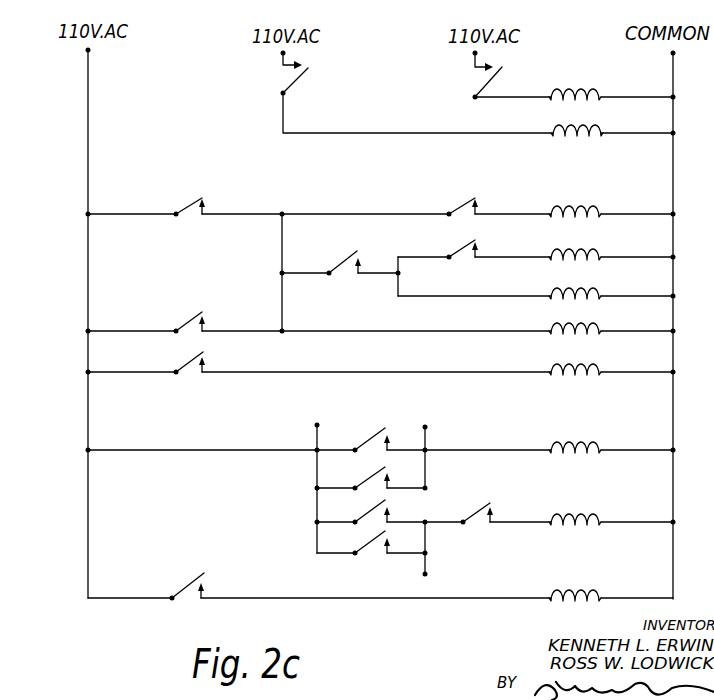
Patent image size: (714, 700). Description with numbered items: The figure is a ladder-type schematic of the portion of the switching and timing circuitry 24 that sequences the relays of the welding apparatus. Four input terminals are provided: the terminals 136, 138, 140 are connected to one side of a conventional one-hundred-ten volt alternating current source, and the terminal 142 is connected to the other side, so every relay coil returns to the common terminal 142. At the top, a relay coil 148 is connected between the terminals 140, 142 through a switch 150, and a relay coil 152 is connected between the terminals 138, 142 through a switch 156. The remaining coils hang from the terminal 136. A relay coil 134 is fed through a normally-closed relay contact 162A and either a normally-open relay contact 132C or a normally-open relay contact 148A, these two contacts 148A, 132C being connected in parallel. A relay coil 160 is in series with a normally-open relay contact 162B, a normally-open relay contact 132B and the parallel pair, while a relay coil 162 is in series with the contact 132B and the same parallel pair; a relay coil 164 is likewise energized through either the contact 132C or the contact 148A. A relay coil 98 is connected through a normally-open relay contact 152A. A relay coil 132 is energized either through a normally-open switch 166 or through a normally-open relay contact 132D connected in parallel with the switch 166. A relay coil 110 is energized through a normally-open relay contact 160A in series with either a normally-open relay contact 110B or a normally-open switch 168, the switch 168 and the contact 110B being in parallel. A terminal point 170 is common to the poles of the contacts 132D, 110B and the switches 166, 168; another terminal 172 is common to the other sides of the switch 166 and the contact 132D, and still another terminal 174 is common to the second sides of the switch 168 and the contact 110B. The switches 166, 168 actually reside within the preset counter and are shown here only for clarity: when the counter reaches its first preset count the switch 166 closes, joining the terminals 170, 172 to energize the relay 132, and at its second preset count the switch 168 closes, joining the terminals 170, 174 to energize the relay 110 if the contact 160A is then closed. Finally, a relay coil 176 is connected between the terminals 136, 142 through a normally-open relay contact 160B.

The switching and timing circuitry 24 is at (370, 52).
The relay coil 98 is at (578, 368).
The relay coil 110 is at (572, 518).
The normally-open relay contact 110B is at (372, 545).
The relay coil 132 is at (572, 446).
The normally-open relay contact 132B is at (343, 262).
The normally-open relay contact 132C is at (188, 322).
The normally-open relay contact 132D is at (375, 478).
The relay coil 134 is at (580, 210).
The input terminal 136 is at (88, 50).
The input terminal 138 is at (283, 53).
The input terminal 140 is at (475, 53).
The input terminal 142 is at (673, 53).
The relay coil 148 is at (566, 92).
The normally-open relay contact 148A is at (188, 206).
The switch 150 is at (492, 80).
The relay coil 152 is at (577, 126).
The normally-open relay contact 152A is at (190, 357).
The switch 156 is at (296, 80).
The relay coil 160 is at (580, 252).
The normally-open relay contact 160A is at (482, 510).
The normally-open relay contact 160B is at (188, 588).
The relay coil 162 is at (580, 292).
The normally-closed relay contact 162A is at (461, 205).
The normally-open relay contact 162B is at (461, 247).
The relay coil 164 is at (580, 327).
The normally-open switch 166 is at (375, 438).
The normally-open switch 168 is at (370, 512).
The terminal point 170 is at (317, 425).
The terminal 172 is at (425, 427).
The terminal 174 is at (425, 574).
The relay coil 176 is at (570, 595).